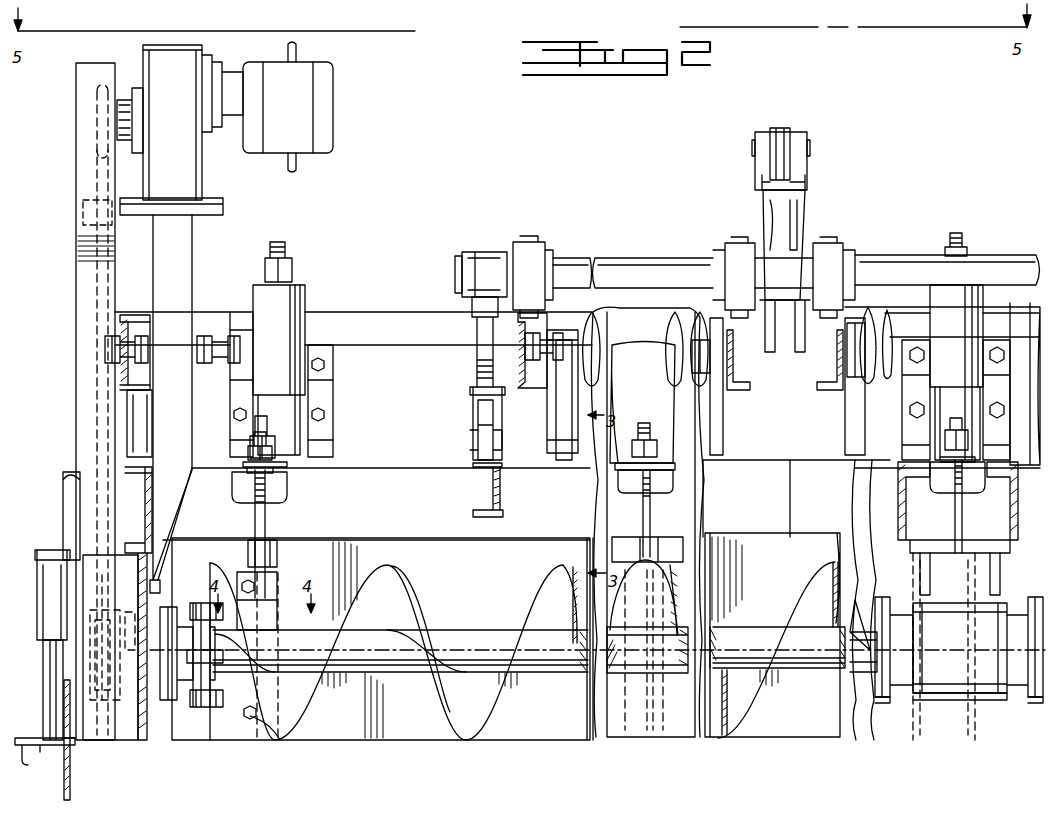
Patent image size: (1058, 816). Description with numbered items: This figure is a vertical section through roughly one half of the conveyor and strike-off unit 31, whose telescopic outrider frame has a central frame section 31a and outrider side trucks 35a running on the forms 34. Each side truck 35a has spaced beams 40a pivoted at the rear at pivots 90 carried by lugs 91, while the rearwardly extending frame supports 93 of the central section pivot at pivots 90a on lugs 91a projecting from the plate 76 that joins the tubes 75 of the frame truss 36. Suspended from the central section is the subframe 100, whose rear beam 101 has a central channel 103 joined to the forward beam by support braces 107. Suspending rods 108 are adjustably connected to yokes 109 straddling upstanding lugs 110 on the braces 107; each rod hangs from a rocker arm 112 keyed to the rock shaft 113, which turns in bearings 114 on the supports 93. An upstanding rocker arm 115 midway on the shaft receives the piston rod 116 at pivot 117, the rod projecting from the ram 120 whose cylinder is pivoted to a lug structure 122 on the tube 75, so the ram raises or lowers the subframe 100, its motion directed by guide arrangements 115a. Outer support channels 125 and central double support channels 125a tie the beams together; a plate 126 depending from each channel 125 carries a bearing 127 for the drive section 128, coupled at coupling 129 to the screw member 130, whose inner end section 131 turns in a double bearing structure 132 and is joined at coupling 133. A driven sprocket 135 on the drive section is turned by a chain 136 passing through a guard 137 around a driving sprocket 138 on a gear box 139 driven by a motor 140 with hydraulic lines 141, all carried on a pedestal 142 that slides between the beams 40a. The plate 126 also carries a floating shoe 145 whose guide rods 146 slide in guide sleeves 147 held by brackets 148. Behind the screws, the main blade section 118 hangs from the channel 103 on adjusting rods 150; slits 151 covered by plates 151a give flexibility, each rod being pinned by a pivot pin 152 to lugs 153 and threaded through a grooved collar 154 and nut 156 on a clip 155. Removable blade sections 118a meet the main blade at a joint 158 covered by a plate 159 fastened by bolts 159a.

The conveyor and strike-off unit 31 is at (390, 290).
The central frame section 31a is at (465, 482).
The form 34 is at (72, 770).
The outrider side truck 35a is at (118, 318).
The frame truss 36 is at (322, 312).
The beam 40a is at (120, 382).
The tube 75 is at (400, 312).
The plate 76 is at (400, 347).
The pivot 90 is at (104, 348).
The pivot 90a is at (528, 340).
The lug 91 is at (142, 432).
The lug 91a is at (845, 440).
The frame support 93 is at (548, 378).
The conveyor and strike-off supporting subframe 100 is at (380, 460).
The rear beam 101 is at (380, 497).
The central channel 103 is at (338, 452).
The support brace 107 is at (503, 508).
The suspending rod 108 is at (477, 360).
The yoke 109 is at (474, 410).
The lug 110 is at (478, 445).
The rocker arm 112 is at (472, 262).
The rock shaft 113 is at (650, 260).
The bearing 114 is at (538, 244).
The rocker arm 115 is at (763, 178).
The guide arrangement 115a is at (254, 290).
The piston rod 116 is at (780, 128).
The pivot 117 is at (752, 146).
The main blade section 118 is at (343, 540).
The removable blade section 118a is at (203, 740).
The ram 120 is at (763, 210).
The lug structure 122 is at (756, 330).
The support channel 125 is at (152, 505).
The double support channel 125a is at (904, 490).
The plate 126 is at (160, 588).
The bearing 127 is at (162, 700).
The drive section 128 is at (204, 627).
The coupling 129 is at (205, 707).
The screw member 130 is at (393, 665).
The inner end section 131 is at (885, 612).
The double bearing structure 132 is at (988, 688).
The coupling 133 is at (880, 703).
The driven sprocket 135 is at (115, 700).
The chain 136 is at (97, 412).
The guard 137 is at (78, 243).
The driving sprocket 138 is at (100, 165).
The gear box 139 is at (203, 50).
The motor 140 is at (333, 100).
The hydraulic line 141 is at (297, 50).
The pedestal 142 is at (176, 234).
The shoe 145 is at (22, 752).
The guide rod 146 is at (43, 650).
The guide sleeve 147 is at (36, 607).
The bracket 148 is at (66, 528).
The adjusting rod 150 is at (268, 512).
The slit 151 is at (655, 735).
The plate 151a is at (630, 722).
The pivot pin 152 is at (648, 552).
The lug 153 is at (240, 553).
The grooved collar 154 is at (665, 445).
The clip 155 is at (238, 475).
The nut 156 is at (640, 425).
The joint 158 is at (264, 738).
The plate 159 is at (281, 588).
The bolt 159a is at (260, 705).